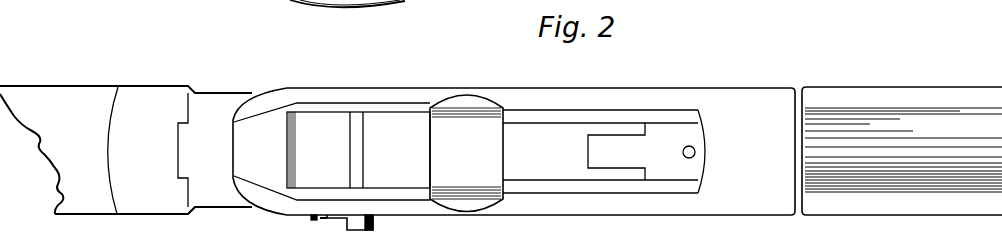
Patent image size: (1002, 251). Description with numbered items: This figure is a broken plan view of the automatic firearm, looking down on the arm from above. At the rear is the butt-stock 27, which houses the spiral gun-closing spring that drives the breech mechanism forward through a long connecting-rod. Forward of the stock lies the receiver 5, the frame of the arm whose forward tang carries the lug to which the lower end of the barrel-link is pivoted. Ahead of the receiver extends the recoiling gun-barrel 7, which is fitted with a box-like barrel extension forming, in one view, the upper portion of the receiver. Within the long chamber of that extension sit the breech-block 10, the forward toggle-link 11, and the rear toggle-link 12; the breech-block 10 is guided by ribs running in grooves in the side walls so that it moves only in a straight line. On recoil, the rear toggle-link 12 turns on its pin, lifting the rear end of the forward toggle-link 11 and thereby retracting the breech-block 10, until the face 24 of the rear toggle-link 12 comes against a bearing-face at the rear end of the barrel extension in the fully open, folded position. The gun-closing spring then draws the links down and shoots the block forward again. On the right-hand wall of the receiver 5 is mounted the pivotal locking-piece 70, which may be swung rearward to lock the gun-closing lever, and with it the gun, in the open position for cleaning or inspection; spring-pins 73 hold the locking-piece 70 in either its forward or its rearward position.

The receiver 5 is at (514, 151).
The recoiling gun-barrel 7 is at (902, 151).
The breech-block 10 is at (626, 151).
The forward toggle-link 11 is at (567, 153).
The rear toggle-link 12 is at (358, 150).
The face of the rear toggle-link 24 is at (357, 138).
The butt-stock 27 is at (126, 150).
The locking-piece 70 is at (374, 226).
The spring-pins 73 is at (313, 222).